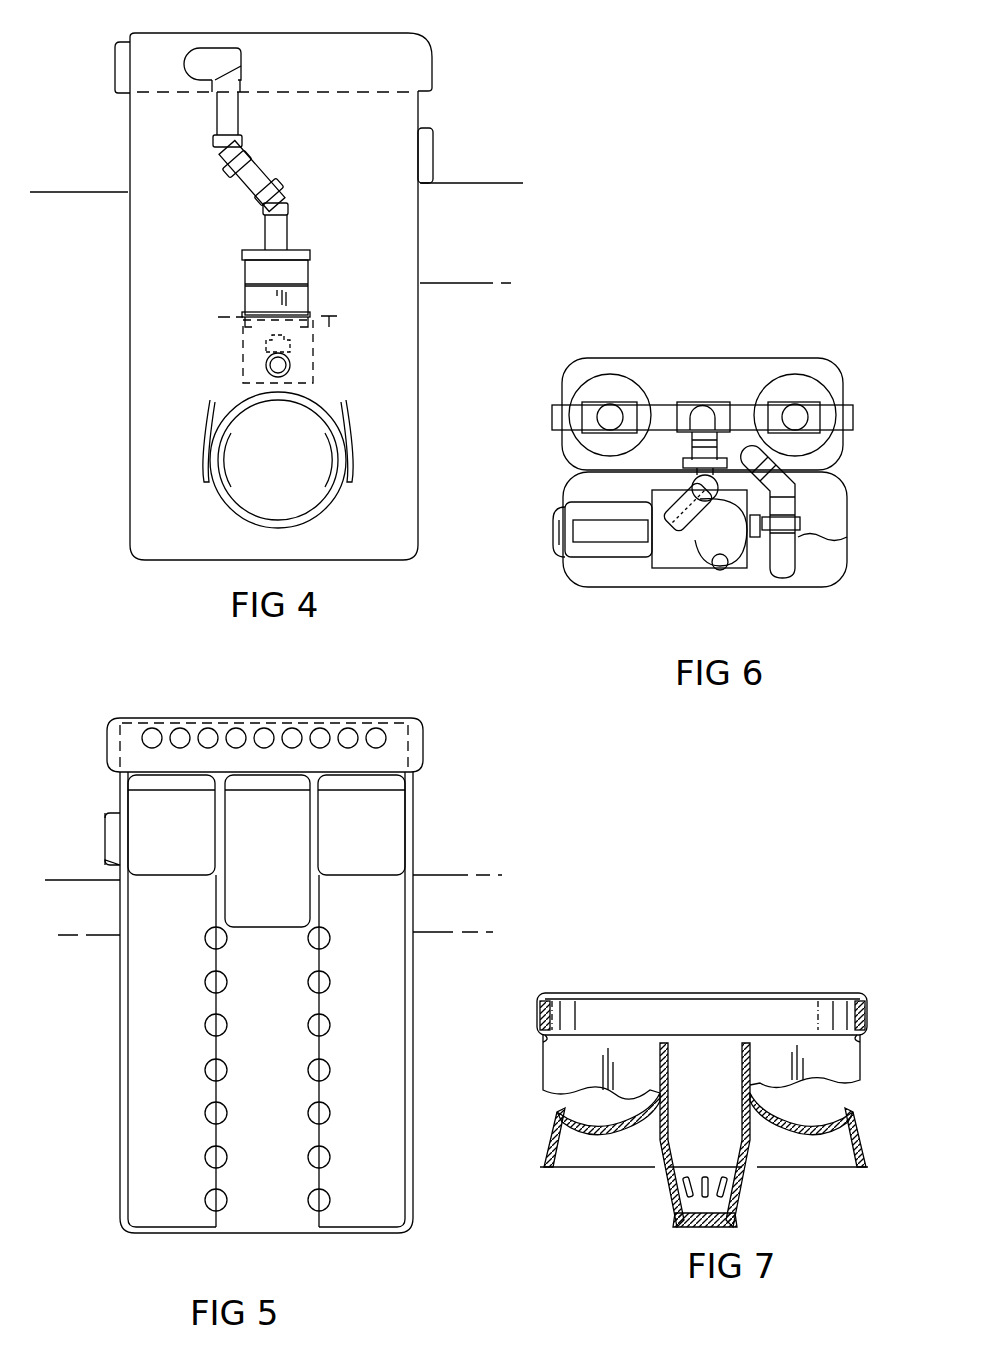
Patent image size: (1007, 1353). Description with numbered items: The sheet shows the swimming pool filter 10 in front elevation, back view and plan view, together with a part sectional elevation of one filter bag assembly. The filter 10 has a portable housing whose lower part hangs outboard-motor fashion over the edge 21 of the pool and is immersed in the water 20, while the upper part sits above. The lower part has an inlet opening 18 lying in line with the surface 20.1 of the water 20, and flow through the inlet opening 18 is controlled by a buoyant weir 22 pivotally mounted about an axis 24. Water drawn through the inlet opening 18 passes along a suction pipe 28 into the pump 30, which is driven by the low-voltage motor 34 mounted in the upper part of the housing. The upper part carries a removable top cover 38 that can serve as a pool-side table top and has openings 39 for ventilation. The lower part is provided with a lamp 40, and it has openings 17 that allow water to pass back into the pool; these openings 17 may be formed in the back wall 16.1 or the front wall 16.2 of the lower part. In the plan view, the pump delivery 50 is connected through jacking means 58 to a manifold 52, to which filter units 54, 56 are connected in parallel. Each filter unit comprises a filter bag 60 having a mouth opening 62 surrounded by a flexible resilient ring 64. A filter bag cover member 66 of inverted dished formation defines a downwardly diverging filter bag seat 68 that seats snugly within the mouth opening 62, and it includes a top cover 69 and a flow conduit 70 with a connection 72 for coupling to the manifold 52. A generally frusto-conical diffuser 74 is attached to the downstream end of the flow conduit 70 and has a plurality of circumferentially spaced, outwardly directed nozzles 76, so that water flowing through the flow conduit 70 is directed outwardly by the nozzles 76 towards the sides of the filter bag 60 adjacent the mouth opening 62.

In FIG. 4, the filter 10 is at (509, 102).
In FIG. 6, the filter 10 is at (867, 380).
In FIG. 5, the back wall 16.1 is at (163, 981).
In FIG. 6, the front wall 16.2 is at (681, 337).
In FIG. 5, the openings 17 is at (292, 1042).
In FIG. 4, the inlet opening 18 is at (233, 309).
In FIG. 5, the water 20 is at (103, 960).
In FIG. 4, the surface 20.1 is at (478, 283).
In FIG. 5, the surface 20.1 is at (448, 932).
In FIG. 4, the edge 21 is at (487, 183).
In FIG. 5, the edge 21 is at (447, 875).
In FIG. 4, the buoyant weir 22 is at (300, 302).
In FIG. 4, the axis 24 is at (328, 322).
In FIG. 4, the suction pipe 28 is at (243, 192).
In FIG. 6, the suction pipe 28 is at (808, 535).
In FIG. 6, the pump 30 is at (735, 552).
In FIG. 6, the motor 34 is at (617, 557).
In FIG. 4, the top cover 38 is at (432, 58).
In FIG. 5, the top cover 38 is at (425, 742).
In FIG. 5, the openings 39 is at (137, 765).
In FIG. 4, the lamp 40 is at (320, 497).
In FIG. 6, the pump delivery 50 is at (677, 540).
In FIG. 6, the manifold 52 is at (748, 412).
In FIG. 6, the filter unit 54 is at (812, 388).
In FIG. 6, the filter unit 56 is at (608, 372).
In FIG. 6, the jacking means 58 is at (670, 476).
In FIG. 7, the filter bag 60 is at (543, 1068).
In FIG. 7, the mouth opening 62 is at (766, 978).
In FIG. 7, the flexible resilient ring 64 is at (858, 999).
In FIG. 7, the filter bag cover member 66 is at (538, 1129).
In FIG. 7, the filter bag seat 68 is at (883, 1035).
In FIG. 7, the top cover 69 is at (622, 1145).
In FIG. 7, the flow conduit 70 is at (762, 1143).
In FIG. 7, the connection 72 is at (653, 1097).
In FIG. 7, the diffuser 74 is at (680, 1247).
In FIG. 7, the nozzles 76 is at (726, 1192).